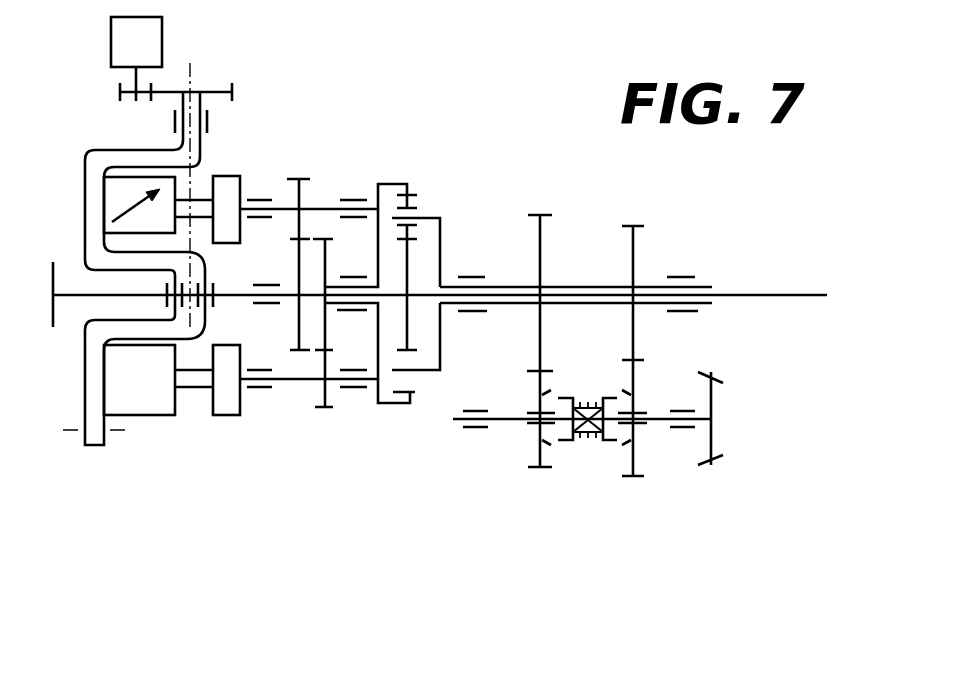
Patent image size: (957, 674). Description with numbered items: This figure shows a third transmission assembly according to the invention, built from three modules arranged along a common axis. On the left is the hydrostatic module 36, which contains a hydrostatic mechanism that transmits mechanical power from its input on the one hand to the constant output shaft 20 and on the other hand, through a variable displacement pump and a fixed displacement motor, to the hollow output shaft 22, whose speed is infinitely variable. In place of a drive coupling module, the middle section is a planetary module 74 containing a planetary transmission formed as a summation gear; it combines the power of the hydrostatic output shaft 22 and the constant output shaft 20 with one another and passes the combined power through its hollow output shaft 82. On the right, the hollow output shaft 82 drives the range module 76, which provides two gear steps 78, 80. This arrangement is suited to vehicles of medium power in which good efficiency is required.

The output shaft 20 is at (313, 298).
The hollow output shaft 22 is at (376, 300).
The hydrostatic module 36 is at (211, 536).
The planetary module 74 is at (371, 539).
The range module 76 is at (574, 557).
The gear step 78 is at (545, 487).
The gear step 80 is at (638, 494).
The hollow output shaft 82 is at (505, 303).